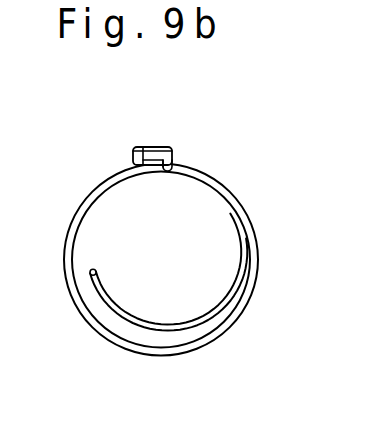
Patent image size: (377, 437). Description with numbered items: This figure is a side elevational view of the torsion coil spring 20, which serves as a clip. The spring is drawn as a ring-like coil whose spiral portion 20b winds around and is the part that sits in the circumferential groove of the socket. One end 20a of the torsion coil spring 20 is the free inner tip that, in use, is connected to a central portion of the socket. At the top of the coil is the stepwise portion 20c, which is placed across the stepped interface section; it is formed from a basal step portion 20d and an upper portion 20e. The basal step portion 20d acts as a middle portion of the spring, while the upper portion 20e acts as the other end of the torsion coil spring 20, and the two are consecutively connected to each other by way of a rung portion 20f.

The torsion coil spring 20 is at (256, 204).
The one end 20a is at (97, 270).
The spiral portion 20b is at (237, 322).
The stepwise portion 20c is at (158, 134).
The basal step portion 20d is at (173, 153).
The upper portion 20e is at (132, 153).
The rung portion 20f is at (150, 148).